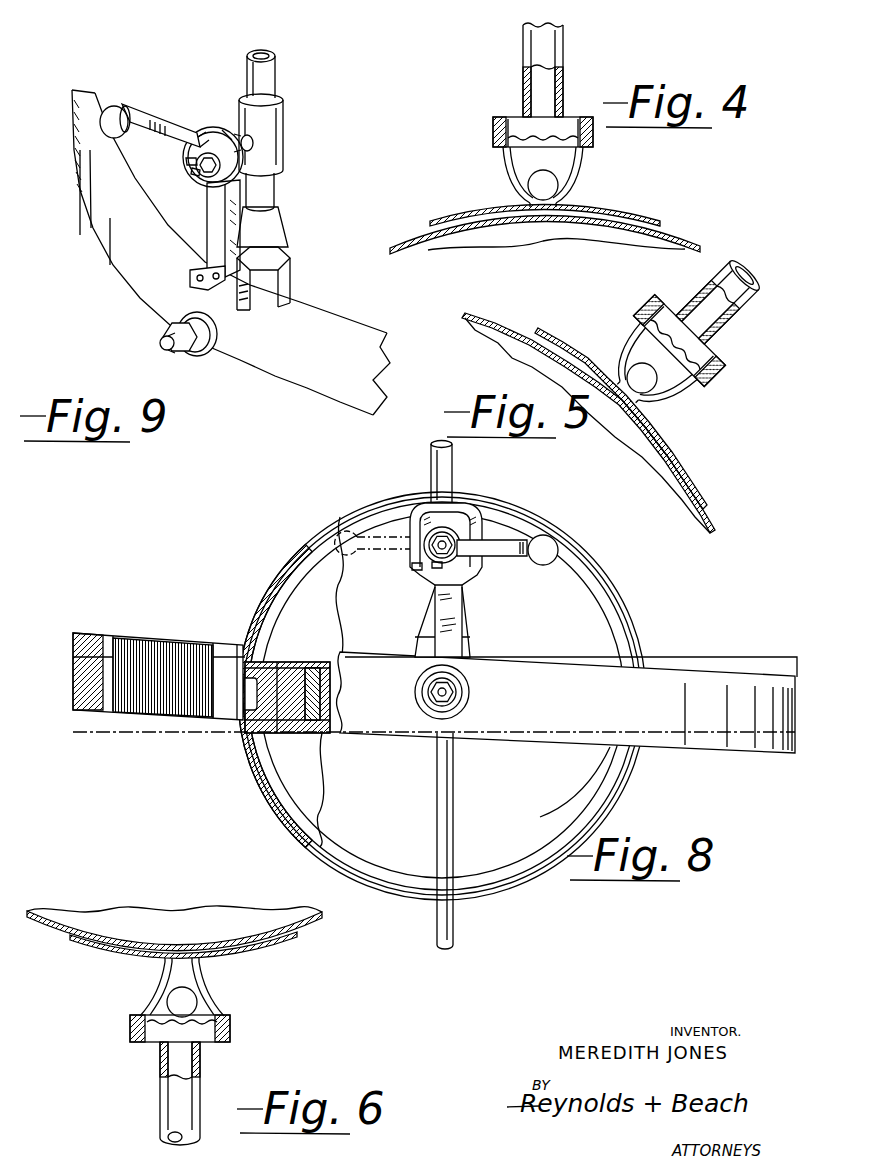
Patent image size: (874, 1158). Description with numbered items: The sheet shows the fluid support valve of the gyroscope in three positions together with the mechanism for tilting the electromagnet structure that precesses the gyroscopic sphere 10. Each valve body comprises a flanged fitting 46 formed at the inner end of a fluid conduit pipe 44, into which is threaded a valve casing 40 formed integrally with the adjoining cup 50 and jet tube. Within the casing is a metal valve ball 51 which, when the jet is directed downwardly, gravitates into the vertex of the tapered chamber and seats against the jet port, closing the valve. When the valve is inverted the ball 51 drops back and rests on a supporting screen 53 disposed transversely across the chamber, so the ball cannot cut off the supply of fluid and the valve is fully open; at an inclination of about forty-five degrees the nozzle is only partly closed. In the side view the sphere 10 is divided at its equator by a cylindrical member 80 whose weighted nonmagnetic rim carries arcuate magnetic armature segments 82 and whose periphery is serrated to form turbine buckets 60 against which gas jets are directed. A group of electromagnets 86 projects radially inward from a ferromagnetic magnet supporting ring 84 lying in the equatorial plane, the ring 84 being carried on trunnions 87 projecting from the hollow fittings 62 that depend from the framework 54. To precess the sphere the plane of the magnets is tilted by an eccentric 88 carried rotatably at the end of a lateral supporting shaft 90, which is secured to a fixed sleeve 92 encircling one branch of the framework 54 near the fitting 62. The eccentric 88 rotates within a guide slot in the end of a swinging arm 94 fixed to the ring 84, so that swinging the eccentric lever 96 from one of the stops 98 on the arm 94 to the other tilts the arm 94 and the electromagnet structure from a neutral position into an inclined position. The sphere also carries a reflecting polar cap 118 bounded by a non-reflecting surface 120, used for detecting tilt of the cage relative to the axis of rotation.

In FIG. 4, the gyroscopic sphere 10 is at (535, 240).
In FIG. 5, the gyroscopic sphere 10 is at (704, 503).
In FIG. 8, the gyroscopic sphere 10 is at (617, 593).
In FIG. 6, the gyroscopic sphere 10 is at (138, 927).
In FIG. 4, the valve casing 40 is at (577, 165).
In FIG. 5, the valve casing 40 is at (628, 352).
In FIG. 6, the valve casing 40 is at (150, 992).
In FIG. 4, the fluid conduit pipe 44 is at (562, 56).
In FIG. 5, the fluid conduit pipe 44 is at (729, 292).
In FIG. 6, the fluid conduit pipe 44 is at (202, 1094).
In FIG. 4, the flanged fitting 46 is at (500, 131).
In FIG. 5, the flanged fitting 46 is at (723, 359).
In FIG. 6, the flanged fitting 46 is at (232, 1036).
In FIG. 4, the cup 50 is at (633, 213).
In FIG. 5, the cup 50 is at (692, 460).
In FIG. 6, the cup 50 is at (290, 936).
In FIG. 4, the valve ball 51 is at (530, 185).
In FIG. 5, the valve ball 51 is at (667, 394).
In FIG. 6, the valve ball 51 is at (190, 997).
In FIG. 4, the supporting screen 53 is at (563, 136).
In FIG. 5, the supporting screen 53 is at (663, 307).
In FIG. 6, the supporting screen 53 is at (157, 1027).
In FIG. 9, the framework 54 is at (263, 67).
In FIG. 8, the framework 54 is at (453, 458).
In FIG. 8, the turbine buckets 60 is at (250, 702).
In FIG. 9, the hollow fitting 62 is at (285, 260).
In FIG. 8, the cylindrical member 80 is at (287, 662).
In FIG. 8, the magnetic armature segments 82 is at (307, 722).
In FIG. 9, the magnet supporting ring 84 is at (287, 390).
In FIG. 8, the magnet supporting ring 84 is at (662, 680).
In FIG. 8, the electromagnets 86 is at (168, 637).
In FIG. 9, the trunnions 87 is at (165, 352).
In FIG. 8, the trunnions 87 is at (470, 692).
In FIG. 9, the eccentric 88 is at (207, 135).
In FIG. 8, the eccentric 88 is at (460, 535).
In FIG. 9, the lateral supporting shaft 90 is at (252, 143).
In FIG. 9, the fixed sleeve 92 is at (283, 103).
In FIG. 9, the swinging arm 94 is at (212, 240).
In FIG. 8, the swinging arm 94 is at (458, 598).
In FIG. 9, the eccentric lever 96 is at (143, 117).
In FIG. 8, the eccentric lever 96 is at (535, 540).
In FIG. 9, the stops 98 is at (197, 172).
In FIG. 8, the stops 98 is at (435, 563).
In FIG. 8, the polar cap 118 is at (420, 492).
In FIG. 8, the non-reflecting surface 120 is at (560, 787).